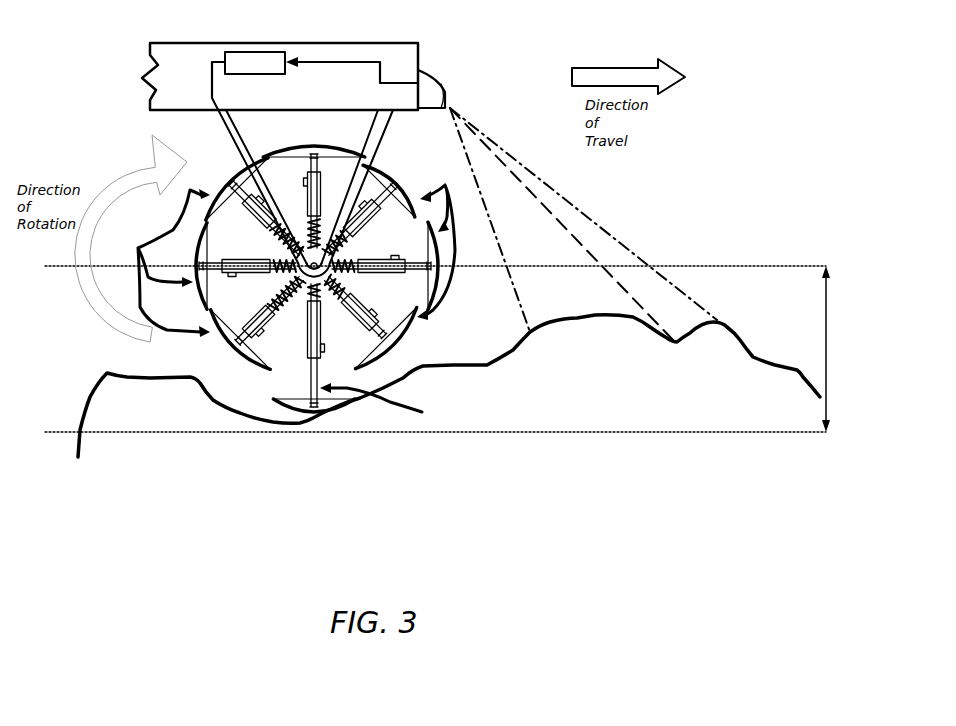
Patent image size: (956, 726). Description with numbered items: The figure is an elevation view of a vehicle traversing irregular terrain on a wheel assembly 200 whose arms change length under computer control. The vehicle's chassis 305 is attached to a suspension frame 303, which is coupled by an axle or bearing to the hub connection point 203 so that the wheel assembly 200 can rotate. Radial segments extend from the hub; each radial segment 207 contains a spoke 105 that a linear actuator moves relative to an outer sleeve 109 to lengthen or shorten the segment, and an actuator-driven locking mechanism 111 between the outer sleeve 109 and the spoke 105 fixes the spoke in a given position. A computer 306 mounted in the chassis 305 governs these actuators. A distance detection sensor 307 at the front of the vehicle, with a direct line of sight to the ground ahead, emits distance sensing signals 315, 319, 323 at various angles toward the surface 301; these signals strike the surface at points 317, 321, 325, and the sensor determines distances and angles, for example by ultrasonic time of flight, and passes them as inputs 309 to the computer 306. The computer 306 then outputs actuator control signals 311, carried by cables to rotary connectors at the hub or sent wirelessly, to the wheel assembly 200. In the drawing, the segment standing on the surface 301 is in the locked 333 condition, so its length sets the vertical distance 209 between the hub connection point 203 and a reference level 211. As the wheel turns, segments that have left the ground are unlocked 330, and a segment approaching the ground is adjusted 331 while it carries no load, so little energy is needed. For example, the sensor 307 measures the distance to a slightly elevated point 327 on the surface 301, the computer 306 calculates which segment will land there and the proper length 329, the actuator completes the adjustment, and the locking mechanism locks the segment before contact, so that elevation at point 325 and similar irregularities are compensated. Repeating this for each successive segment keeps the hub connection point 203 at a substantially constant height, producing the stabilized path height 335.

The spoke 105 is at (311, 386).
The outer sleeve 109 is at (306, 348).
The actuator-driven locking mechanism 111 is at (322, 352).
The wheel assembly 200 is at (190, 361).
The hub connection point 203 is at (326, 262).
The radial segment 207 is at (268, 400).
The vertical distance 209 is at (826, 333).
The reference level 211 is at (645, 433).
The surface 301 is at (106, 397).
The suspension frame 303 is at (382, 152).
The chassis 305 is at (165, 43).
The computer 306 is at (281, 50).
The distance detection sensor 307 is at (441, 85).
The inputs 309 is at (347, 62).
The actuator control signals 311 is at (238, 152).
The distance sensing signal 315 is at (585, 213).
The surface point 317 is at (722, 327).
The distance sensing signal 319 is at (580, 238).
The surface point 321 is at (670, 343).
The distance sensing signal 323 is at (514, 292).
The surface point 325 is at (530, 337).
The surface point 327 is at (430, 367).
The proper length 329 is at (398, 350).
The unlock state 330 is at (203, 279).
The adjusting state 331 is at (398, 267).
The locked state 333 is at (370, 355).
The stabilized path height 335 is at (662, 267).